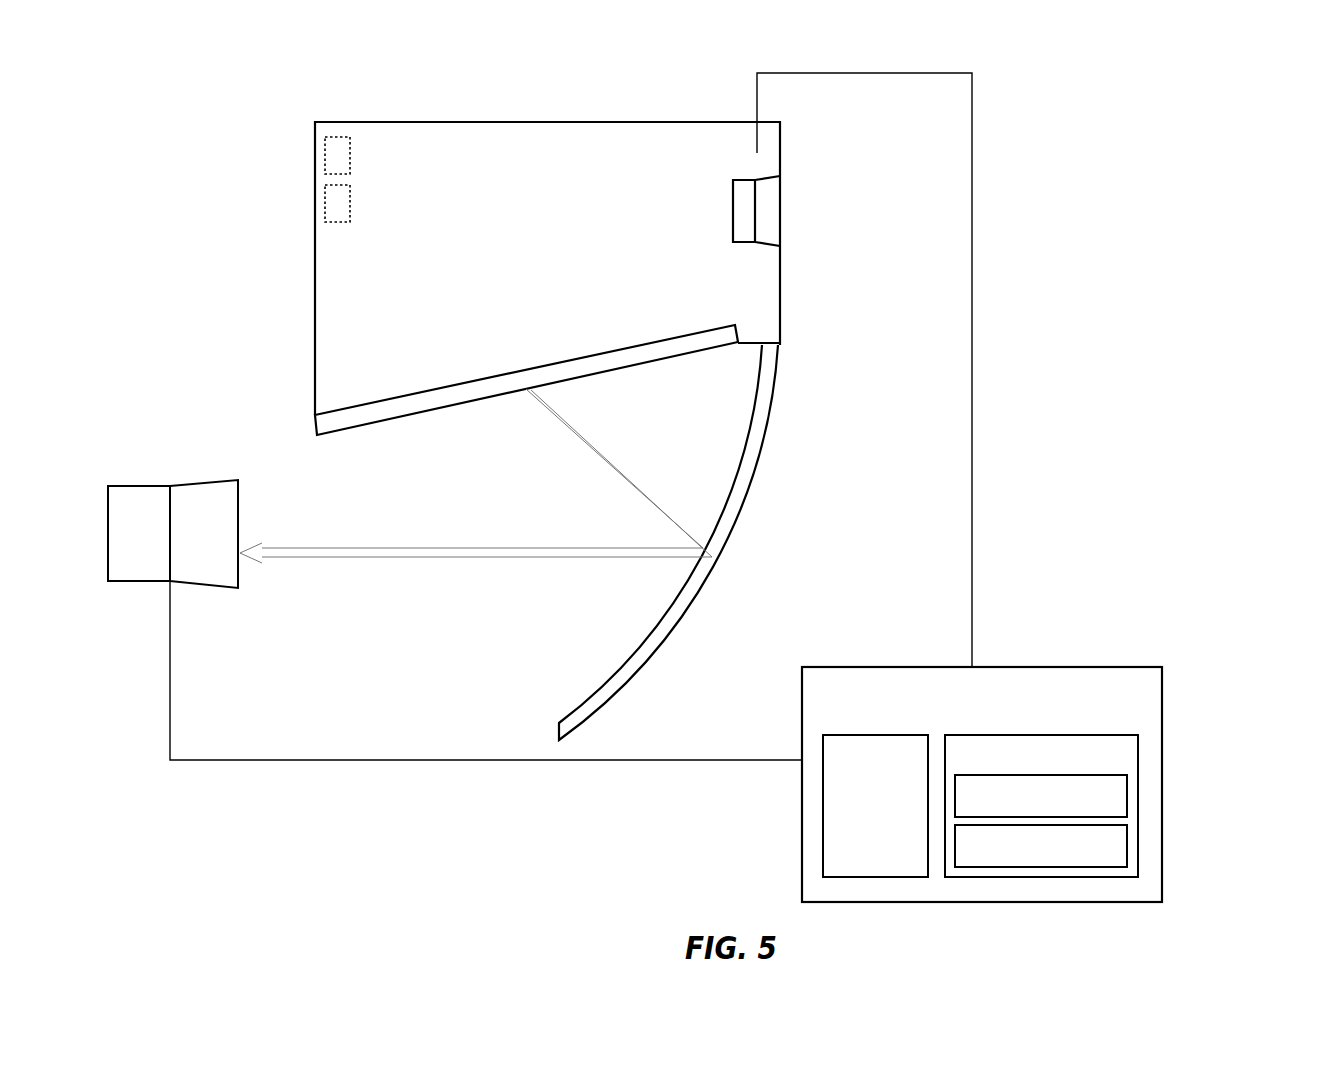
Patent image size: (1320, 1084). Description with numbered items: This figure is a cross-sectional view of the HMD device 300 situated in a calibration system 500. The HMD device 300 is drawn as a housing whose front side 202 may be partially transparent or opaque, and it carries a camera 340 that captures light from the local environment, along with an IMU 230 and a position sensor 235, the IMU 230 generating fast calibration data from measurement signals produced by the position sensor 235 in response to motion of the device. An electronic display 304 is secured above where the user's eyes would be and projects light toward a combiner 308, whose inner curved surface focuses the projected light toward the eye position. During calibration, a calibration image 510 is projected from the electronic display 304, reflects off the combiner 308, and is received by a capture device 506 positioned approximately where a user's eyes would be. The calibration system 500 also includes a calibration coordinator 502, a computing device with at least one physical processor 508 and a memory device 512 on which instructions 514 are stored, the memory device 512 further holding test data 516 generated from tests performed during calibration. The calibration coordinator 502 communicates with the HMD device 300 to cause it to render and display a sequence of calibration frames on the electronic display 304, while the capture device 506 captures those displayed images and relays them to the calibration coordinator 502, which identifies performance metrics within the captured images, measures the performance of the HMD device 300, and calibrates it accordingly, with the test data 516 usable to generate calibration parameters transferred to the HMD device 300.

The HMD device 300 is at (576, 390).
The front side 202 is at (636, 121).
The camera 340 is at (748, 180).
The IMU 230 is at (315, 158).
The position sensor 235 is at (315, 205).
The electronic display 304 is at (520, 370).
The image 510 is at (621, 465).
The combiner 308 is at (777, 410).
The capture device 506 is at (455, 620).
The calibration system 500 is at (1049, 751).
The calibration coordinator 502 is at (982, 784).
The physical processor 508 is at (875, 806).
The memory device 512 is at (1041, 806).
The instructions 514 is at (1041, 796).
The test data 516 is at (1041, 846).